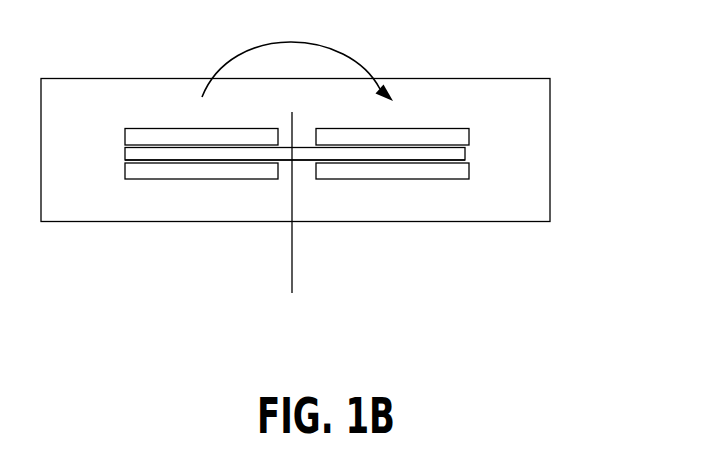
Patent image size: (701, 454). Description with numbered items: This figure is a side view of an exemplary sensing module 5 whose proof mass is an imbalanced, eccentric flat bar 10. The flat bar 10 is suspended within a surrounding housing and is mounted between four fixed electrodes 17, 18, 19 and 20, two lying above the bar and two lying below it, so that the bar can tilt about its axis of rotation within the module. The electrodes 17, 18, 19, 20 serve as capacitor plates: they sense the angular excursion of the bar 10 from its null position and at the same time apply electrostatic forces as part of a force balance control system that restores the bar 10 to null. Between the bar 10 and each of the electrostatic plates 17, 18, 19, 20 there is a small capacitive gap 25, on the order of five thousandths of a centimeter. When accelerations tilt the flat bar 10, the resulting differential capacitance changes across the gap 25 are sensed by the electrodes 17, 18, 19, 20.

The sensing module 5 is at (550, 79).
The imbalanced flat bar 10 is at (465, 148).
The fixed electrode 17 is at (202, 128).
The fixed electrode 18 is at (403, 128).
The fixed electrode 19 is at (202, 182).
The fixed electrode 20 is at (400, 179).
The capacitive gap 25 is at (465, 158).